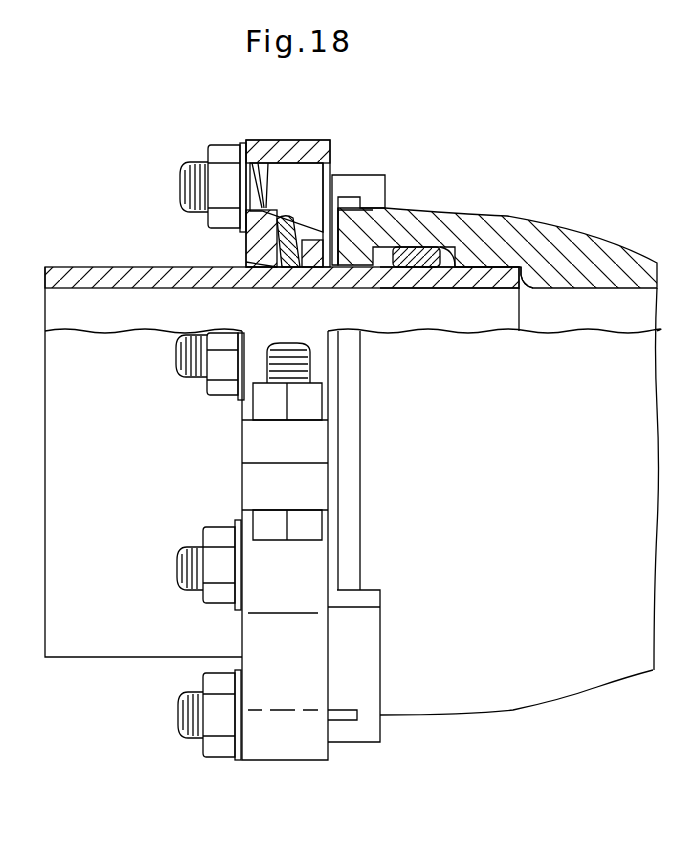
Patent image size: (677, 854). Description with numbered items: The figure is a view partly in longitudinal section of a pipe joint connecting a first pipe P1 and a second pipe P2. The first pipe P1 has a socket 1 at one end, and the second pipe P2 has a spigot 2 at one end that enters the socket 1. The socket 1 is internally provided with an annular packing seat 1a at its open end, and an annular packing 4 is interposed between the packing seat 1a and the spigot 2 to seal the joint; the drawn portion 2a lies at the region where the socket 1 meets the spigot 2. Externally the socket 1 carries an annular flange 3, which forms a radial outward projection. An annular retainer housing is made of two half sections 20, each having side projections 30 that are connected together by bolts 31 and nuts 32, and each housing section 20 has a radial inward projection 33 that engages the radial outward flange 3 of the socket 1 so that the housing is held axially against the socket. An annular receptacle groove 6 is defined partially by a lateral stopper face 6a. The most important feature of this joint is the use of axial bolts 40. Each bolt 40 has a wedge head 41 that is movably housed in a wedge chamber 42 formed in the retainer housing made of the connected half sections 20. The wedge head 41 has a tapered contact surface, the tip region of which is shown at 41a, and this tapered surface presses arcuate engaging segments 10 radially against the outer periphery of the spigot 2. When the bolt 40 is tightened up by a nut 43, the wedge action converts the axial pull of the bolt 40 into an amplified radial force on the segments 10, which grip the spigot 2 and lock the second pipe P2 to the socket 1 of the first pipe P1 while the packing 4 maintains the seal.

The socket 1 is at (557, 233).
The annular packing seat 1a is at (430, 250).
The spigot 2 is at (473, 280).
The step of flange plate 2a is at (530, 273).
The annular flange 3 is at (347, 203).
The annular packing 4 is at (413, 262).
The annular receptacle groove 6 is at (283, 267).
The lateral stopper face 6a is at (247, 260).
The arcuate engaging segments 10 is at (295, 253).
The half sections of retainer housing 20 is at (293, 142).
The side projections 30 is at (253, 445).
The bolts 31 is at (263, 522).
The nuts 32 is at (263, 407).
The radial inward projection 33 is at (380, 188).
The axial bolts 40 is at (197, 167).
The wedge head 41 is at (313, 173).
The wedge tip 41a is at (270, 207).
The wedge chamber 42 is at (253, 213).
The nut 43 is at (227, 157).
The first pipe P1 is at (650, 282).
The second pipe P2 is at (83, 280).